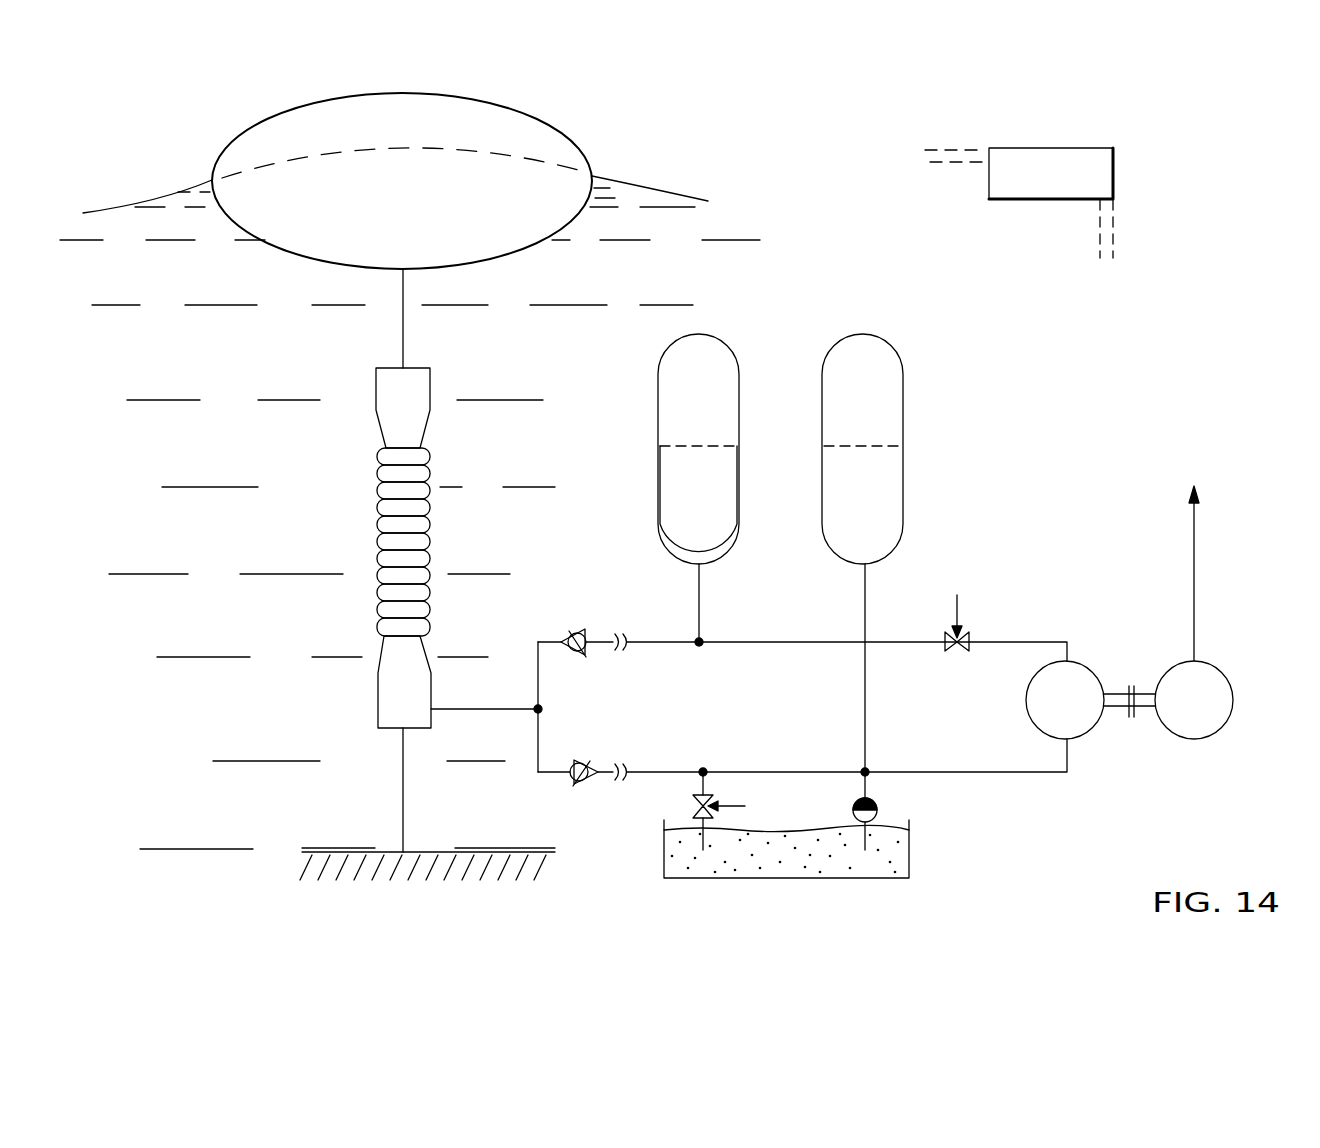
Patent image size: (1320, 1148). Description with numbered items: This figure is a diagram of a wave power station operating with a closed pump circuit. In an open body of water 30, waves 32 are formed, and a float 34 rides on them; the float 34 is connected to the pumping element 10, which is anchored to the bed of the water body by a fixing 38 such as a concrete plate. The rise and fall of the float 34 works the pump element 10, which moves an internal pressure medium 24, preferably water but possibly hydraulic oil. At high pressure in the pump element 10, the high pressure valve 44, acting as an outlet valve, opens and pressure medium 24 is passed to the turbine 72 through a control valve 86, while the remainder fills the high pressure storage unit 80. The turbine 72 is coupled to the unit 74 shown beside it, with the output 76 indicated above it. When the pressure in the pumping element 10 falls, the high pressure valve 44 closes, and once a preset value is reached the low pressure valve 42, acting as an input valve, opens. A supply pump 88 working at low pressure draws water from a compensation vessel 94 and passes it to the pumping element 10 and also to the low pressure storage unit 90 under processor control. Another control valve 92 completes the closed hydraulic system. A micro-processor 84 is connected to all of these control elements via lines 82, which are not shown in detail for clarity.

The pump element 10 is at (316, 622).
The pressure medium 24 is at (672, 498).
The body of water 30 is at (270, 364).
The waves 32 is at (692, 198).
The float 34 is at (553, 138).
The fixing 38 is at (398, 870).
The low pressure valve 42 is at (585, 784).
The high pressure valve 44 is at (577, 633).
The turbine 72 is at (1090, 722).
The generator 74 is at (1215, 722).
The power output 76 is at (1197, 603).
The high pressure storage unit 80 is at (670, 407).
The lines 82 is at (1098, 215).
The micro-processor 84 is at (1102, 183).
The control valve 86 is at (962, 636).
The supply pump 88 is at (878, 808).
The low pressure storage unit 90 is at (898, 415).
The control valve 92 is at (745, 806).
The compensation vessel 94 is at (898, 866).